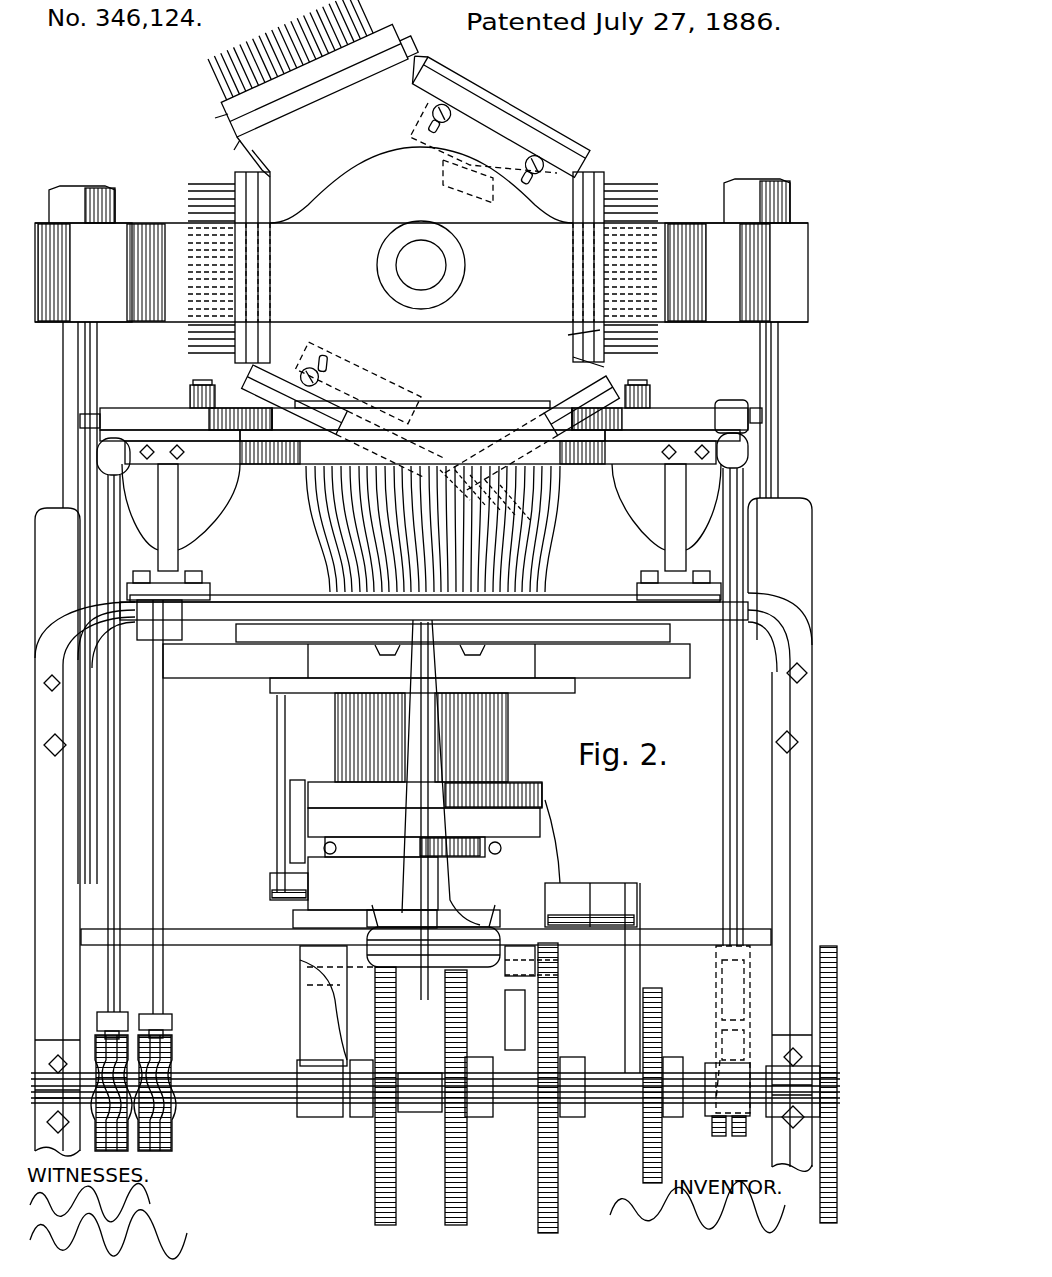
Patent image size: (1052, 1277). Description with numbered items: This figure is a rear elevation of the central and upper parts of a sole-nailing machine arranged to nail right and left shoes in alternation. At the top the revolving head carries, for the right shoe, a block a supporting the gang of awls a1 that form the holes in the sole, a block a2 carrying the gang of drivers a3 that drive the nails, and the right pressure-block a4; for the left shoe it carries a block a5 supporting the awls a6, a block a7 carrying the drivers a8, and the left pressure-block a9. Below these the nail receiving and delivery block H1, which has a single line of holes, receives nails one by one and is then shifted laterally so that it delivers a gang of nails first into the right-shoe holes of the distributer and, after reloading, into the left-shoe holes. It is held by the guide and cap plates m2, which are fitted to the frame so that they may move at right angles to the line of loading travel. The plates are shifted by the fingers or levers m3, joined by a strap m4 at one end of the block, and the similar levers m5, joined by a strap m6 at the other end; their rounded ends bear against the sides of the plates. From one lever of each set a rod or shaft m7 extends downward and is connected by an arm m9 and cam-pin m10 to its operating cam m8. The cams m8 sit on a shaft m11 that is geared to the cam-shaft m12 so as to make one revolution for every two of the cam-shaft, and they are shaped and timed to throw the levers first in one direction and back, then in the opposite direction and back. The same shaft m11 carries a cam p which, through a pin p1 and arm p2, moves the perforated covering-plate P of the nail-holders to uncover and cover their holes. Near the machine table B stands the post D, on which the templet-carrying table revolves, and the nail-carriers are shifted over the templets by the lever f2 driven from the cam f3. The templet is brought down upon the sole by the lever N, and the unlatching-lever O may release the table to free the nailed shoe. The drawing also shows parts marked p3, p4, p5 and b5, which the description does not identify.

The block a is at (585, 395).
The awls a1 is at (436, 529).
The block a2 is at (572, 340).
The drivers a3 is at (615, 260).
The right pressure-block a4 is at (530, 114).
The block a5 is at (395, 48).
The awls a6 is at (214, 113).
The block a7 is at (231, 153).
The drivers a8 is at (225, 263).
The left pressure-block a9 is at (268, 385).
The guide and cap plates m2 is at (422, 424).
The levers m3 is at (176, 418).
The strap m4 is at (193, 374).
The levers m5 is at (660, 415).
The strap m6 is at (645, 388).
The rods or shafts m7 is at (160, 876).
The cams m8 is at (420, 1101).
The arm m9 is at (95, 1017).
The cam-pin m10 is at (103, 1036).
The shaft m11 is at (240, 1098).
The cam-shaft m12 is at (600, 1095).
The nail receiving and delivery block H1 is at (478, 412).
The cam p is at (175, 1055).
The pin p1 is at (165, 1032).
The arm p2 is at (175, 1012).
The rod p3 is at (163, 776).
The bar p4 is at (248, 598).
The plate p5 is at (425, 600).
The plate b5 is at (453, 631).
The perforated covering-plate P is at (398, 615).
The lever N is at (281, 797).
The lever f2 is at (430, 750).
The cam f3 is at (467, 1163).
The table B is at (426, 928).
The post D is at (365, 892).
The unlatching-lever O is at (563, 880).